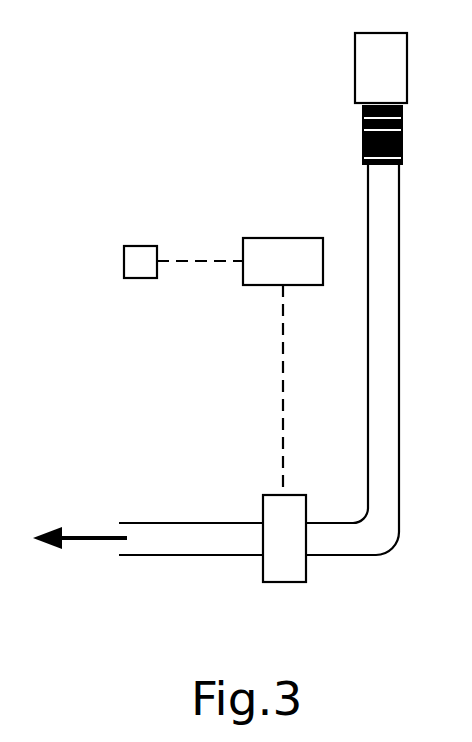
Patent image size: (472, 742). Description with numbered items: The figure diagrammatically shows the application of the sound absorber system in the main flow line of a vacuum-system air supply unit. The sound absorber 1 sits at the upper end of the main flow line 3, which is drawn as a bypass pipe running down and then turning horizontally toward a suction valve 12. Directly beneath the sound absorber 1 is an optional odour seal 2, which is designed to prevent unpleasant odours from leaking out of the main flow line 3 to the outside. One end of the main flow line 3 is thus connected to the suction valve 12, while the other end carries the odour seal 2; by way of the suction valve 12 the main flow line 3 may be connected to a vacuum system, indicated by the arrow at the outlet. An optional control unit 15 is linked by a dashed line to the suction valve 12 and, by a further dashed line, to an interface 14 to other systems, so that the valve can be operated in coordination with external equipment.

The sound absorber 1 is at (355, 78).
The odour seal 2 is at (361, 144).
The main flow line 3 is at (378, 318).
The suction valve 12 is at (262, 512).
The interface to other system(s) 14 is at (142, 247).
The control unit 15 is at (283, 238).